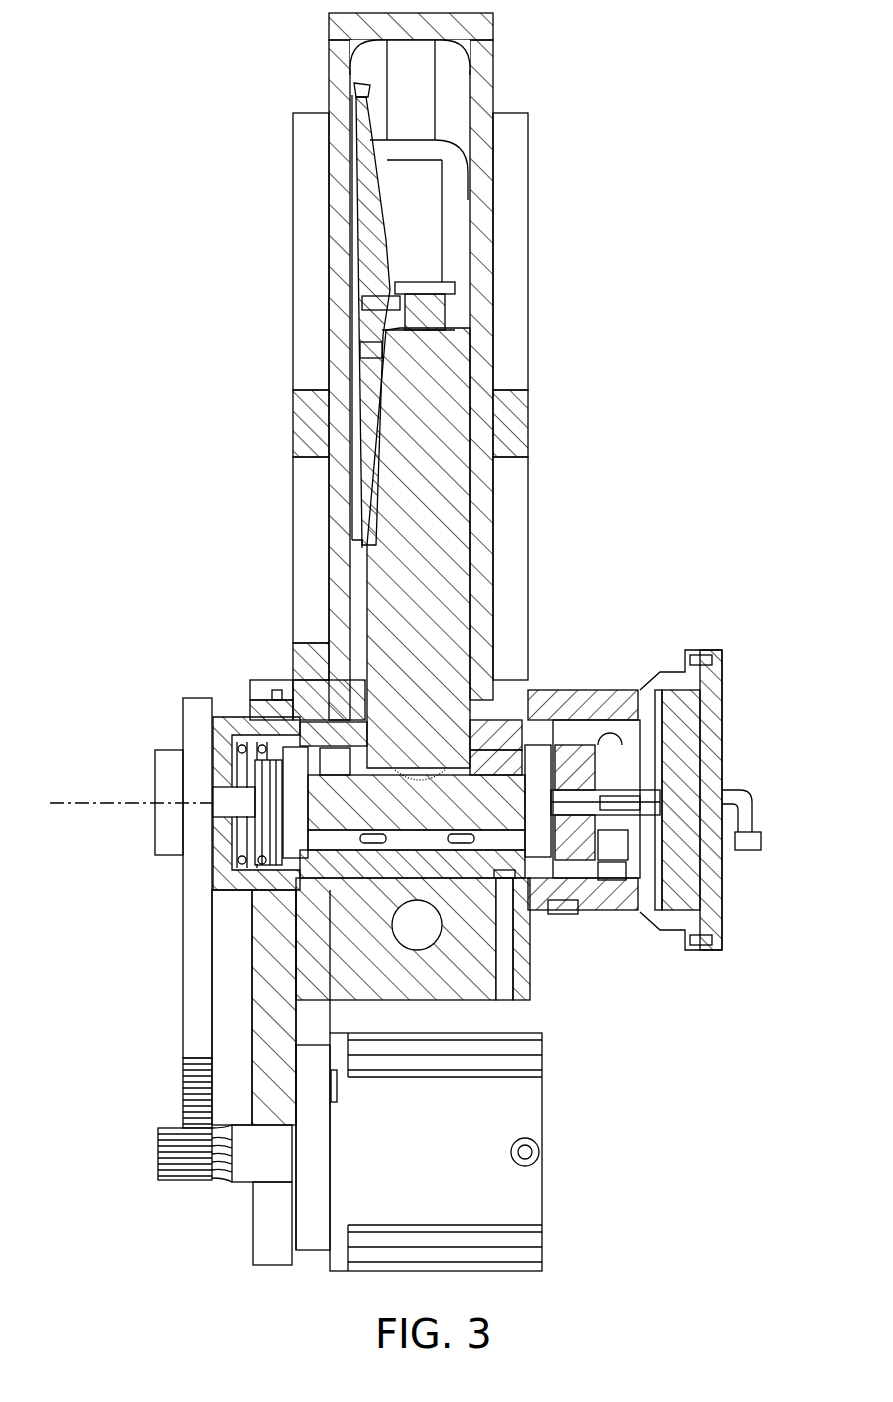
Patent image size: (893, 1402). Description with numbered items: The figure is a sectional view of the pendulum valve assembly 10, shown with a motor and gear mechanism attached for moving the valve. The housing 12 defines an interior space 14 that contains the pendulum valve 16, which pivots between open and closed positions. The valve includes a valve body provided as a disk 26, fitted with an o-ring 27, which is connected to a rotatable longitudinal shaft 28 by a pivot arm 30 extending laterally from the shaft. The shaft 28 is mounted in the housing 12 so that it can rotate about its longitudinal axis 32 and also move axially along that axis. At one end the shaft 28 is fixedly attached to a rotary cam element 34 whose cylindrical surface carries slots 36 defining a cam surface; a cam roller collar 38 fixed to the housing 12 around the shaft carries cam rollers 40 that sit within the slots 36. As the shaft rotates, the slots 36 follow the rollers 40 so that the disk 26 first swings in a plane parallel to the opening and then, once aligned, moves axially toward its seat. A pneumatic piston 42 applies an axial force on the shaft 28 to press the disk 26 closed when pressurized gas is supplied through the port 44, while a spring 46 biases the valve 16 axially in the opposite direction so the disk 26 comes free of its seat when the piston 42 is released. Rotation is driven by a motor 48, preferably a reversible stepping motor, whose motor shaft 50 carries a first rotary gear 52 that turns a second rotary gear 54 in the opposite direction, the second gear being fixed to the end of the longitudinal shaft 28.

The pendulum valve assembly 10 is at (597, 340).
The housing 12 is at (493, 80).
The interior space 14 is at (422, 92).
The pendulum valve 16 is at (392, 247).
The disk 26 is at (362, 213).
The o-ring 27 is at (356, 90).
The longitudinal shaft 28 is at (330, 790).
The pivot arm 30 is at (458, 508).
The longitudinal axis 32 is at (74, 806).
The rotary cam element 34 is at (575, 900).
The slots 36 is at (612, 880).
The cam roller collar 38 is at (592, 698).
The cam rollers 40 is at (618, 735).
The pneumatic piston 42 is at (698, 712).
The port 44 is at (762, 842).
The spring 46 is at (245, 835).
The motor 48 is at (528, 1185).
The motor shaft 50 is at (232, 1182).
The first rotary gear 52 is at (185, 1165).
The second rotary gear 54 is at (192, 1005).